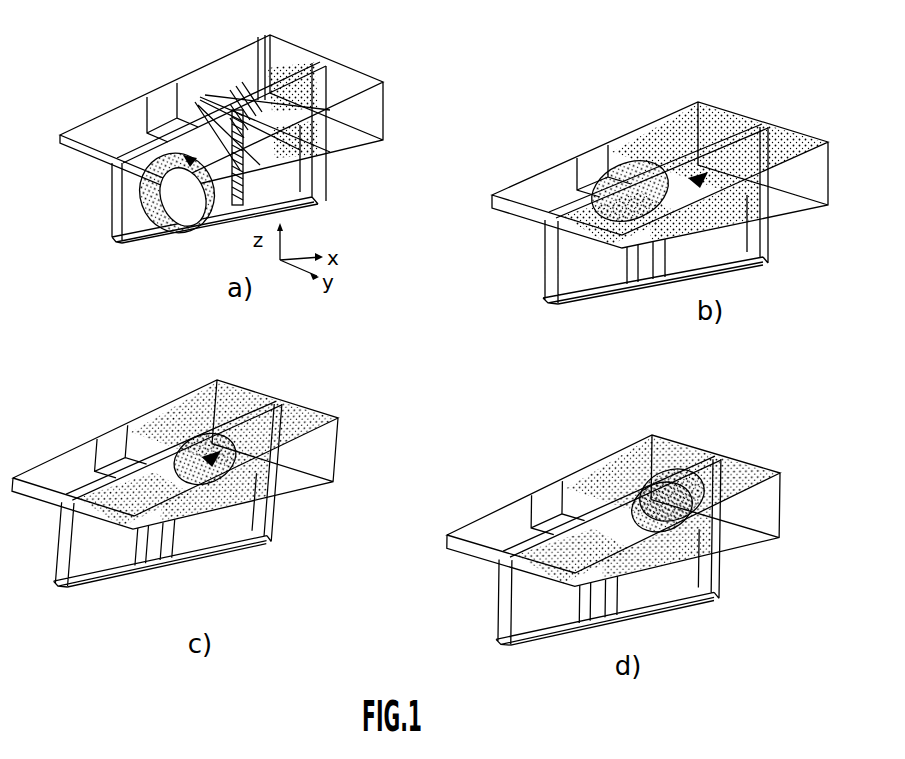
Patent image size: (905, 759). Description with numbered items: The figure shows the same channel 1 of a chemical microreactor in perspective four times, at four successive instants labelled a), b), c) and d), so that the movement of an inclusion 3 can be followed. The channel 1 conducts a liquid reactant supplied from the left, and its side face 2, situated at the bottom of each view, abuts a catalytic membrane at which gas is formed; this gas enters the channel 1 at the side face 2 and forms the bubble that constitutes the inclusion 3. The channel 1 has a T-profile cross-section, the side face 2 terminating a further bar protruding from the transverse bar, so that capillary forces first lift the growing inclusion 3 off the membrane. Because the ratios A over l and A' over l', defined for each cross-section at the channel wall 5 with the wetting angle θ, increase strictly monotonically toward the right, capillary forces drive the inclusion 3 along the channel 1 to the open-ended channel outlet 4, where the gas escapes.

The channel 1 is at (115, 92).
The side face 2 is at (317, 205).
The inclusion 3 is at (163, 203).
The channel outlet 4 is at (370, 110).
The channel wall 5 is at (257, 55).
The surface content of the channel cross-section A is at (213, 115).
The surface content of the associated surface A' is at (282, 140).